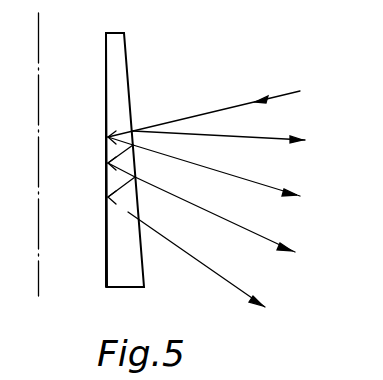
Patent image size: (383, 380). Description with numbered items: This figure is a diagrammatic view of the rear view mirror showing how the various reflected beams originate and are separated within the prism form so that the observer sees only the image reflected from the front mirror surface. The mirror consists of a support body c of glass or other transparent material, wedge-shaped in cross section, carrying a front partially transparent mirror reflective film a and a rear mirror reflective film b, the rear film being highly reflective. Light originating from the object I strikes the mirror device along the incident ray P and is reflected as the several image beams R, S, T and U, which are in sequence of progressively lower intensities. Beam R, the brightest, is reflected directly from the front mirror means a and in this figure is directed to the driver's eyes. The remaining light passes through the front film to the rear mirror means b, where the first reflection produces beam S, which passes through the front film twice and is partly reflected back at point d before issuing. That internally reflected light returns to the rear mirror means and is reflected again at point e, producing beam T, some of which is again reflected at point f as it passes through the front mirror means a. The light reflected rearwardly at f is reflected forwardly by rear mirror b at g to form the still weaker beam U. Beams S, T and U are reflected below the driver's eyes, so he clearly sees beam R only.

The front partially transparent mirror reflective film a is at (130, 81).
The rear mirror reflective film b is at (107, 117).
The support body c is at (116, 82).
The point of further reflection by the front mirror means d is at (138, 144).
The point of second reflection at the rear mirror means e is at (107, 162).
The point of reflection at the front mirror means f is at (138, 183).
The point of reflection at the rear mirror means g is at (107, 197).
The incident ray P is at (225, 109).
The object I is at (310, 93).
The reflected beam R is at (248, 137).
The reflected beam S is at (250, 181).
The reflected beam T is at (245, 229).
The reflected beam U is at (240, 290).